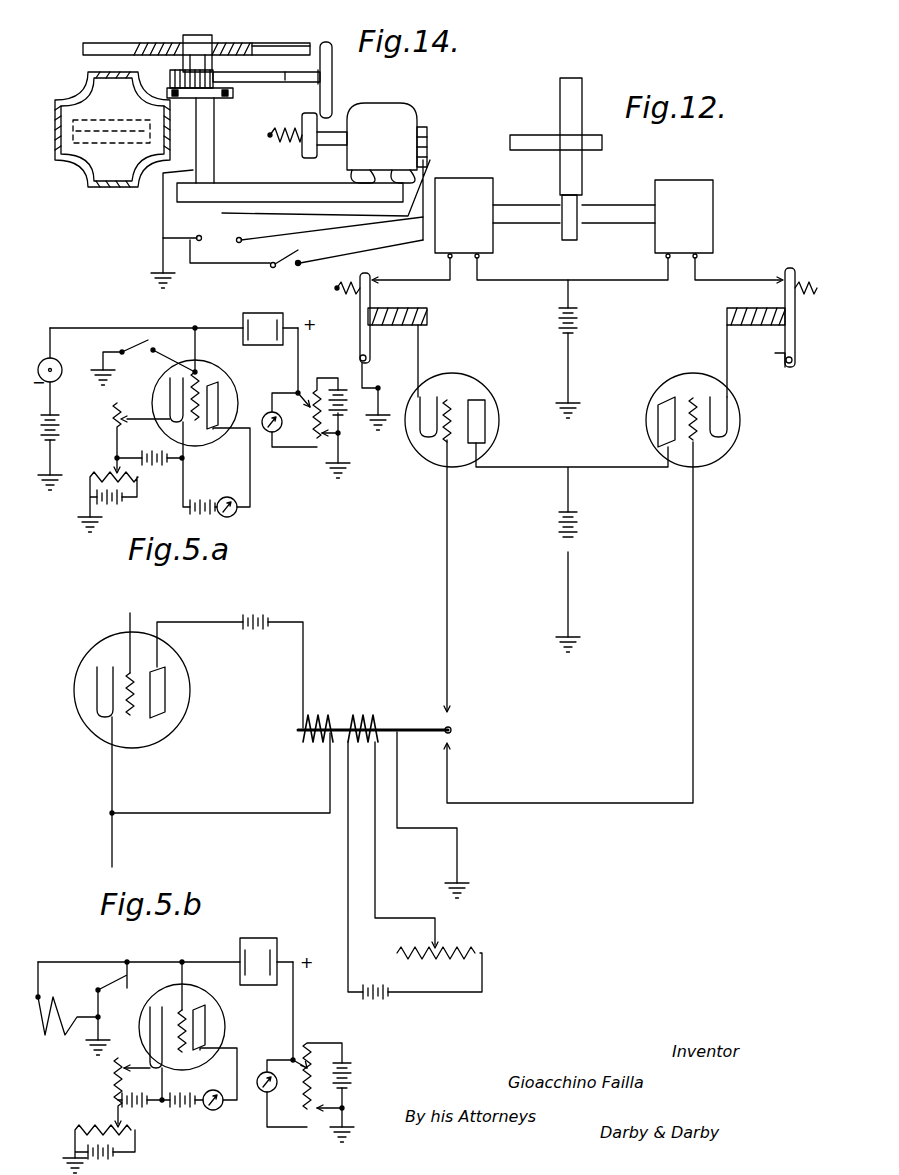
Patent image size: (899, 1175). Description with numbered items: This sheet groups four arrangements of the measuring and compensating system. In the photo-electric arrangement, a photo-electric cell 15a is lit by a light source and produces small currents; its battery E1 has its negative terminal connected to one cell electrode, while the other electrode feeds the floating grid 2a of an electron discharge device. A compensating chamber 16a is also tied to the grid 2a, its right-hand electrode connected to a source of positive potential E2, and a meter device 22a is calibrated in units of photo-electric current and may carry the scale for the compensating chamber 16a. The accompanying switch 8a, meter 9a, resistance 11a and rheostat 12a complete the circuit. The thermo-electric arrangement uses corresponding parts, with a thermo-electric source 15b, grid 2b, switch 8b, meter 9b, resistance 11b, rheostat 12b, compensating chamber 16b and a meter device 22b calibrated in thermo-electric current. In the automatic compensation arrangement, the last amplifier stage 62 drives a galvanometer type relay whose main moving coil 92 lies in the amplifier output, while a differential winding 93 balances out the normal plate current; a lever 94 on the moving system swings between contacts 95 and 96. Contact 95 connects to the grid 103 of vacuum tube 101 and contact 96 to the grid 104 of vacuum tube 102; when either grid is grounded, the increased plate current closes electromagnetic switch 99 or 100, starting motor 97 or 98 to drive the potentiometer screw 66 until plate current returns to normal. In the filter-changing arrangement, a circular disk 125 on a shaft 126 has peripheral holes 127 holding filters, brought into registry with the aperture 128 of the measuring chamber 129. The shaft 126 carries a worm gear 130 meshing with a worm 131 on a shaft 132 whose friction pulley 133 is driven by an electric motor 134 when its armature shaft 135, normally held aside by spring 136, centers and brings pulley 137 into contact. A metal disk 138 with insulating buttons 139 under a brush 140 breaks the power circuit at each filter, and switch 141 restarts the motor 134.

In FIG. 14, the circular disk 125 is at (247, 43).
In FIG. 14, the shaft 126 is at (187, 42).
In FIG. 14, the holes 127 is at (292, 43).
In FIG. 14, the aperture 128 is at (113, 71).
In FIG. 14, the measuring chamber 129 is at (57, 147).
In FIG. 14, the worm gear 130 is at (180, 68).
In FIG. 14, the worm 131 is at (215, 67).
In FIG. 14, the shaft 132 is at (285, 82).
In FIG. 14, the friction pulley 133 is at (333, 76).
In FIG. 14, the electric motor 134 is at (380, 103).
In FIG. 14, the armature shaft 135 is at (323, 144).
In FIG. 14, the spring 136 is at (288, 127).
In FIG. 14, the pulley 137 is at (300, 150).
In FIG. 14, the metal disk 138 is at (233, 100).
In FIG. 14, the insulating buttons 139 is at (178, 98).
In FIG. 14, the brush 140 is at (220, 103).
In FIG. 14, the switch 141 is at (283, 262).
In FIG. 12, the potentiometer screw 66 is at (530, 132).
In FIG. 12, the motor 97 is at (470, 157).
In FIG. 12, the motor 98 is at (703, 240).
In FIG. 12, the electromagnetic switch 99 is at (415, 308).
In FIG. 12, the electromagnetic switch 100 is at (725, 305).
In FIG. 12, the vacuum tube 101 is at (478, 378).
In FIG. 12, the vacuum tube 102 is at (672, 380).
In FIG. 12, the grid 103 is at (440, 442).
In FIG. 12, the grid 104 is at (697, 452).
In FIG. 12, the last amplifier stage 62 is at (93, 738).
In FIG. 12, the main moving coil 92 is at (322, 716).
In FIG. 12, the differential winding 93 is at (378, 716).
In FIG. 12, the lever 94 is at (418, 740).
In FIG. 12, the contact 95 is at (462, 582).
In FIG. 12, the contact 96 is at (568, 622).
In FIG. 5A, the grid 2a is at (200, 378).
In FIG. 5A, the switch 8a is at (118, 350).
In FIG. 5A, the meter 9a is at (222, 514).
In FIG. 5A, the resistance 11a is at (118, 505).
In FIG. 5A, the rheostat 12a is at (110, 476).
In FIG. 5A, the photo-electric cell 15a is at (40, 371).
In FIG. 5A, the compensating chamber 16a is at (267, 313).
In FIG. 5A, the meter device 22a is at (258, 408).
In FIG. 5A, the battery E1 is at (62, 450).
In FIG. 5A, the source of positive potential E2 is at (338, 390).
In FIG. 5B, the vacuum tube 2b is at (188, 1002).
In FIG. 5B, the switch 8b is at (108, 1000).
In FIG. 5B, the meter 9b is at (215, 1110).
In FIG. 5B, the resistance 11b is at (110, 1150).
In FIG. 5B, the rheostat 12b is at (90, 1062).
In FIG. 5B, the thermocouple 15b is at (72, 1003).
In FIG. 5B, the compensating chamber 16b is at (268, 938).
In FIG. 5B, the meter device 22b is at (253, 1080).